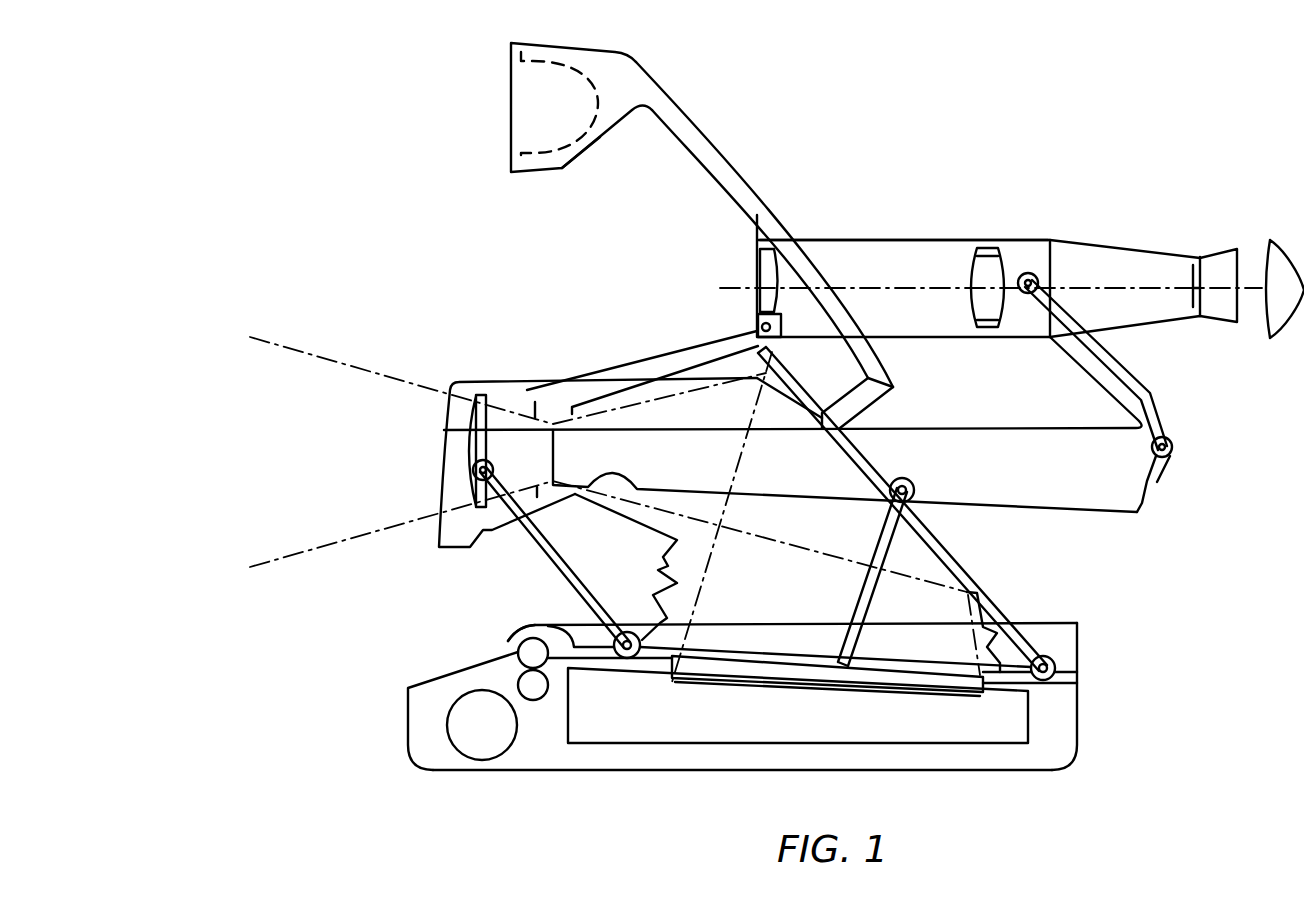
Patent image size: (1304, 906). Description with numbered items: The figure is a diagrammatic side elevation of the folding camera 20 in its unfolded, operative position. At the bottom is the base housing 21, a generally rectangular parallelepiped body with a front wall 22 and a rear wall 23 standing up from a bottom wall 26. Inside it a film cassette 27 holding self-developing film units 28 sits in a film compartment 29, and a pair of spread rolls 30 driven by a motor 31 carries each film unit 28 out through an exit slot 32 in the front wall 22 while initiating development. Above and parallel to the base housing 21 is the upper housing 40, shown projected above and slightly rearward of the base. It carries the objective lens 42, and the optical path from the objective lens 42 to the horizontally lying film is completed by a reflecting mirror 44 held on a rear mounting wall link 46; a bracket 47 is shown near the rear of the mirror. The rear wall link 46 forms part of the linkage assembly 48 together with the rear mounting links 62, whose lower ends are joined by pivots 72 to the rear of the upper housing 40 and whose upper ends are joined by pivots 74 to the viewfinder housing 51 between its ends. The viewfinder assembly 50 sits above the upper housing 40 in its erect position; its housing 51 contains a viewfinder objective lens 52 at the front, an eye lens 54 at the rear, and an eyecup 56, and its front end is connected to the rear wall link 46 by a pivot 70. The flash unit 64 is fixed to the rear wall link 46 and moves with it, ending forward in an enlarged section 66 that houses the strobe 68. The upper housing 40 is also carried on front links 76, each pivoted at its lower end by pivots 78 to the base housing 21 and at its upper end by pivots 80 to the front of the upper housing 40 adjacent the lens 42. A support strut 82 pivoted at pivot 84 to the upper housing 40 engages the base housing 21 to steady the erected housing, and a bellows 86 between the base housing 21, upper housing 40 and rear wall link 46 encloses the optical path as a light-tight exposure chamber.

The folding camera 20 is at (413, 320).
The base housing 21 is at (1090, 616).
The front wall 22 is at (408, 726).
The rear wall 23 is at (1077, 703).
The bottom wall 26 is at (785, 770).
The film cassette 27 is at (1032, 723).
The film units 28 is at (850, 690).
The film compartment 29 is at (760, 655).
The spread rolls 30 is at (523, 682).
The motor 31 is at (480, 748).
The exit slot 32 is at (507, 641).
The upper housing 40 is at (1030, 477).
The objective lens 42 is at (483, 393).
The reflecting mirror 44 is at (847, 453).
The rear mounting wall link 46 is at (995, 610).
The bracket 47 is at (883, 390).
The linkage assembly 48 is at (1062, 535).
The viewfinder assembly 50 is at (1020, 212).
The viewfinder housing 51 is at (864, 240).
The viewfinder objective lens 52 is at (757, 265).
The eye lens 54 is at (988, 247).
The eyecup 56 is at (1205, 278).
The rear mounting links 62 is at (1125, 372).
The flash unit 64 is at (697, 108).
The enlarged section 66 is at (577, 147).
The strobe 68 is at (528, 116).
The pivot 70 is at (757, 325).
The pivots 72 is at (1174, 451).
The pivots 74 is at (1040, 278).
The front links 76 is at (553, 545).
The pivots 78 is at (627, 660).
The pivots 80 is at (473, 470).
The support strut 82 is at (880, 623).
The pivot 84 is at (913, 492).
The bellows 86 is at (658, 568).